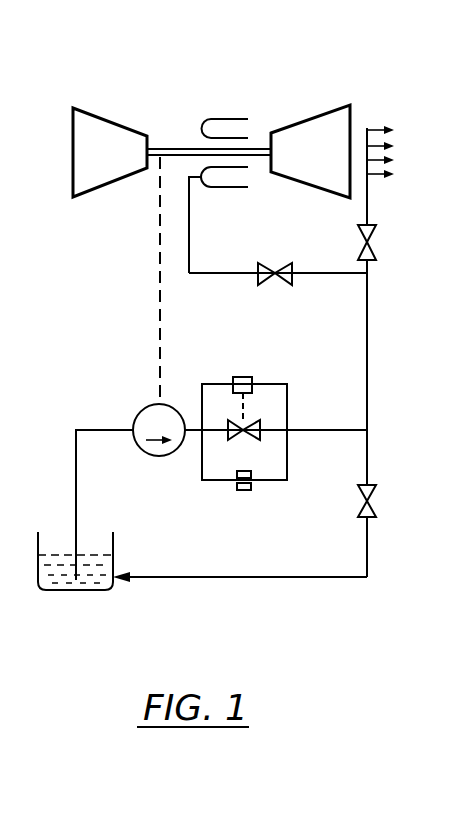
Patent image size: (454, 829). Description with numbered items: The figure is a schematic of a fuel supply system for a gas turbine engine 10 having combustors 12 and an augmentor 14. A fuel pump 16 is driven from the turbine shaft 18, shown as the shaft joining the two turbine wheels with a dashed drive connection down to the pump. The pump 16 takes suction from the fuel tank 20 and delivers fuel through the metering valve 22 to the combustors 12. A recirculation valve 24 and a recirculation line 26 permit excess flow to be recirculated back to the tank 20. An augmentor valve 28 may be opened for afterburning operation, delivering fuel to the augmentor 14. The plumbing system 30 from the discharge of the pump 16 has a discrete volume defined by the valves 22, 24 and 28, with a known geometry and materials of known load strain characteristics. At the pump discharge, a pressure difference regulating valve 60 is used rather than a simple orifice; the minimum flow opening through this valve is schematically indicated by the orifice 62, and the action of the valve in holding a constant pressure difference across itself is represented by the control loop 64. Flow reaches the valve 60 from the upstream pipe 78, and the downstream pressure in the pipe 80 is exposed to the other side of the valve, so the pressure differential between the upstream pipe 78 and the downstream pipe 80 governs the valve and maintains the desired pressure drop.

The gas turbine engine 10 is at (322, 88).
The combustors 12 is at (223, 118).
The augmentor 14 is at (367, 128).
The fuel pump 16 is at (141, 410).
The turbine shaft 18 is at (173, 147).
The fuel tank 20 is at (115, 540).
The metering valve 22 is at (270, 262).
The recirculation valve 24 is at (375, 506).
The recirculation line 26 is at (262, 577).
The augmentor valve 28 is at (378, 250).
The plumbing system 30 is at (374, 351).
The pressure difference regulating valve 60 is at (254, 418).
The orifice 62 is at (243, 490).
The control loop 64 is at (242, 377).
The upstream pipe 78 is at (192, 432).
The downstream pipe 80 is at (302, 430).